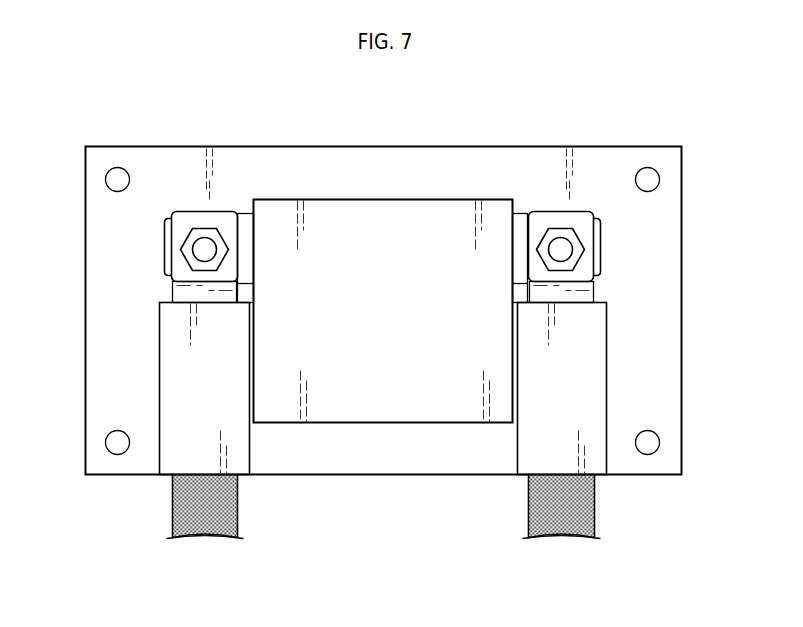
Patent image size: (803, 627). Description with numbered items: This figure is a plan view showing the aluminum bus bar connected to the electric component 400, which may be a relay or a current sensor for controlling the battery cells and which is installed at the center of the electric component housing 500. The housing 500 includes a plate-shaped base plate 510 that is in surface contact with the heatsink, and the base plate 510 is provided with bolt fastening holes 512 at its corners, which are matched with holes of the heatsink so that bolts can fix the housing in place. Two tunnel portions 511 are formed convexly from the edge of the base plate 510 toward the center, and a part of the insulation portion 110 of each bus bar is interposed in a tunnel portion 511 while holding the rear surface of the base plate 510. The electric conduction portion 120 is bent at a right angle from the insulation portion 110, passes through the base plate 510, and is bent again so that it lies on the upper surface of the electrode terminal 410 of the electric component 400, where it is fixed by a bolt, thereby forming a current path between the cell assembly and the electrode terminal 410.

The electric component housing 500 is at (283, 115).
The base plate 510 is at (665, 285).
The tunnel portion 511 is at (183, 390).
The bolt fastening hole 512 is at (646, 180).
The electric component 400 is at (374, 193).
The electrode terminal 410 is at (247, 228).
The electric conduction portion 120 is at (187, 218).
The insulation portion 110 is at (205, 525).